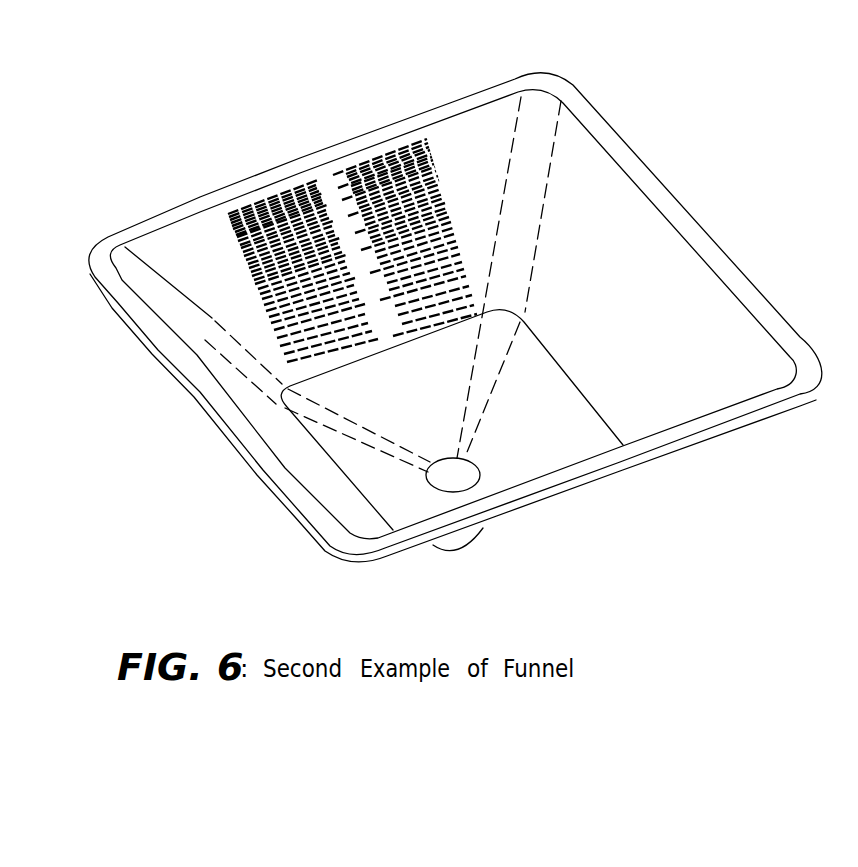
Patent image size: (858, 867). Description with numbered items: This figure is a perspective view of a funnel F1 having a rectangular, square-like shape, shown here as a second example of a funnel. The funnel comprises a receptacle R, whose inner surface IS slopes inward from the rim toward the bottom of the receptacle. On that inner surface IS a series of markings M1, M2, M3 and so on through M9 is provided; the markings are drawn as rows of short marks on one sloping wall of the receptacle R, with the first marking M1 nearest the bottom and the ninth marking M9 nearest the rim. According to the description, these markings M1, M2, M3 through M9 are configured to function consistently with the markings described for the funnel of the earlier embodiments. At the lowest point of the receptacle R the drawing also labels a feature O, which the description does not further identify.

The marking M1 is at (289, 366).
The marking M2 is at (352, 298).
The marking M3 is at (273, 150).
The marking M9 is at (355, 161).
The receptacle R is at (453, 106).
The inner surface IS is at (585, 221).
The funnel F1 is at (455, 298).
The outlet O is at (485, 539).